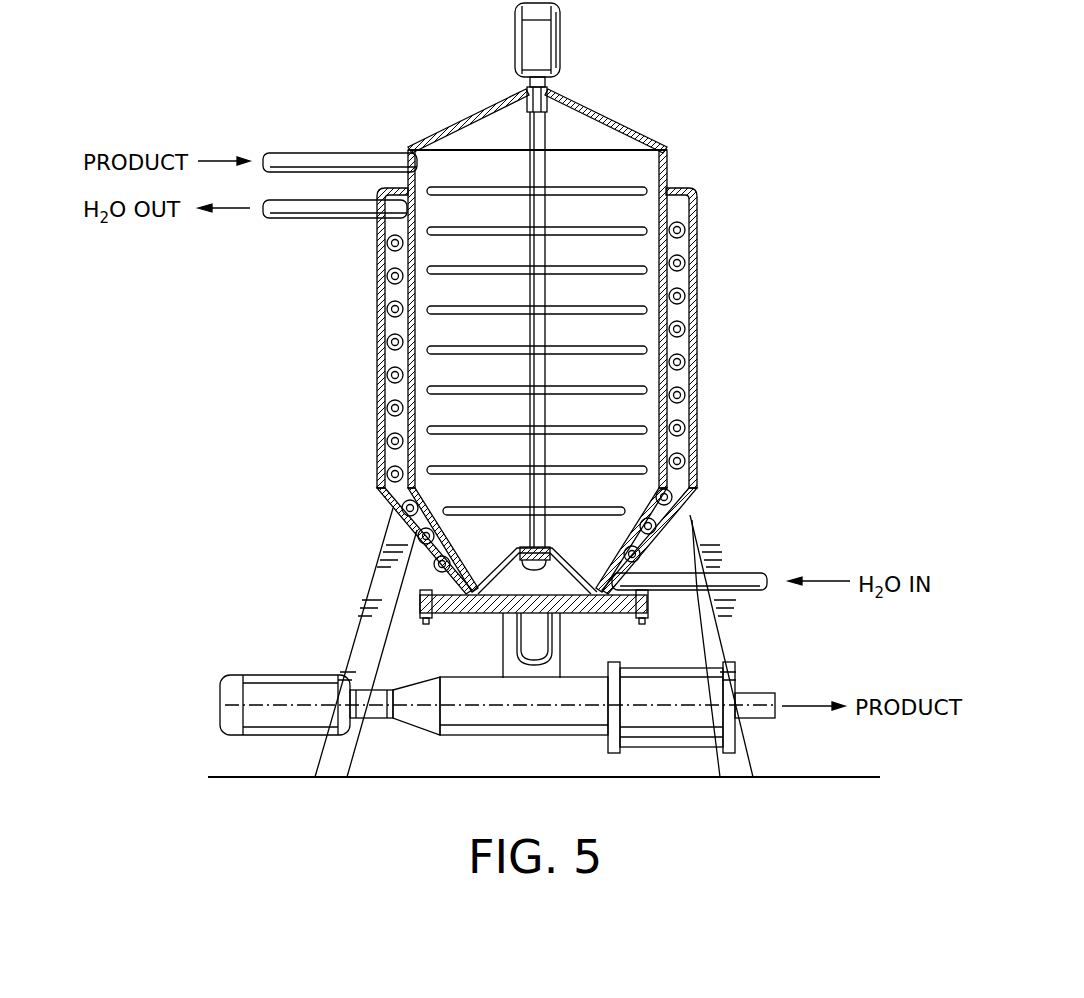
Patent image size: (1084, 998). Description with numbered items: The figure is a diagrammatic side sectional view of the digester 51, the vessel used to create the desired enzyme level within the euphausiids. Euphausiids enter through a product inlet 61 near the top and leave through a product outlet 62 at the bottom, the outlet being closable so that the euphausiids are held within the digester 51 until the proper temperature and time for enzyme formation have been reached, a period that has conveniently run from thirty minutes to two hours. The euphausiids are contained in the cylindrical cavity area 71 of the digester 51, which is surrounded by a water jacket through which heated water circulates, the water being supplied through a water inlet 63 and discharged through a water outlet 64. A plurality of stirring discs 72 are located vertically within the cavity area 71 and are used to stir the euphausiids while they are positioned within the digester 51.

The digester 51 is at (724, 263).
The product inlet 61 is at (340, 152).
The product outlet 62 is at (560, 656).
The water inlet 63 is at (726, 572).
The water outlet 64 is at (342, 220).
The cylindrical cavity area 71 is at (630, 405).
The stirring discs 72 is at (627, 317).